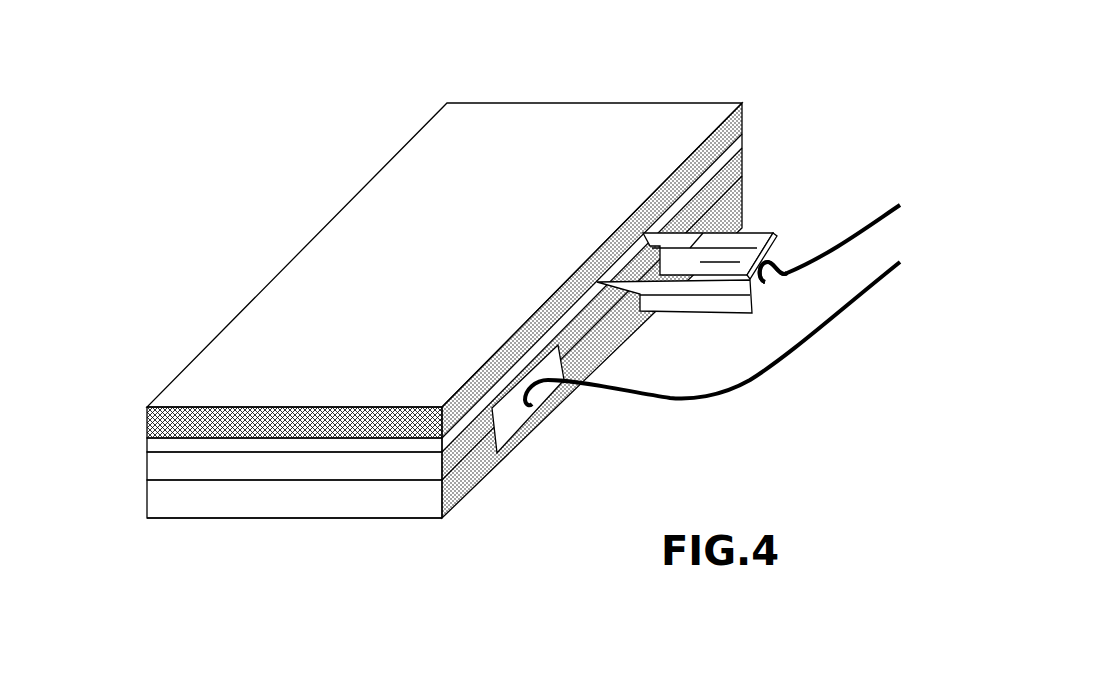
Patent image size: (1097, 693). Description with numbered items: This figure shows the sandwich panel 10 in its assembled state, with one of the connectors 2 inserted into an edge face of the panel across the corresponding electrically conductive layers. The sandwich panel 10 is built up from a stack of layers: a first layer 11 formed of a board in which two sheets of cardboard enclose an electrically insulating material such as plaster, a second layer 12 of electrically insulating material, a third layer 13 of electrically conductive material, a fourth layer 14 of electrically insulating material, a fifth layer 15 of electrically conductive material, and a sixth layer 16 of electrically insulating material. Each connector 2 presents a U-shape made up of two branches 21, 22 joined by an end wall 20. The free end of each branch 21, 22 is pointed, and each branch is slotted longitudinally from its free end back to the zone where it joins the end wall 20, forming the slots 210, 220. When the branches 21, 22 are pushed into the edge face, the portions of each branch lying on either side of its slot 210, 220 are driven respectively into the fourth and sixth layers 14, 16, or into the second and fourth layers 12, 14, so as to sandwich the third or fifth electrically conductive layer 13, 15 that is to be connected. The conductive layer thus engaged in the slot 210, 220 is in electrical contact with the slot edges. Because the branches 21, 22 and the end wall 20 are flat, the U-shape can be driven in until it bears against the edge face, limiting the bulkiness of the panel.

The sandwich panel 10 is at (577, 90).
The first layer 11 is at (146, 424).
The second layer 12 is at (745, 132).
The third layer 13 is at (160, 453).
The fourth layer 14 is at (160, 475).
The fifth layer 15 is at (193, 482).
The sixth layer 16 is at (285, 507).
The connector 2 is at (838, 192).
The end wall 20 is at (763, 279).
The branch 21 is at (632, 304).
The slot 210 is at (668, 296).
The branch 22 is at (737, 234).
The slot 220 is at (690, 244).